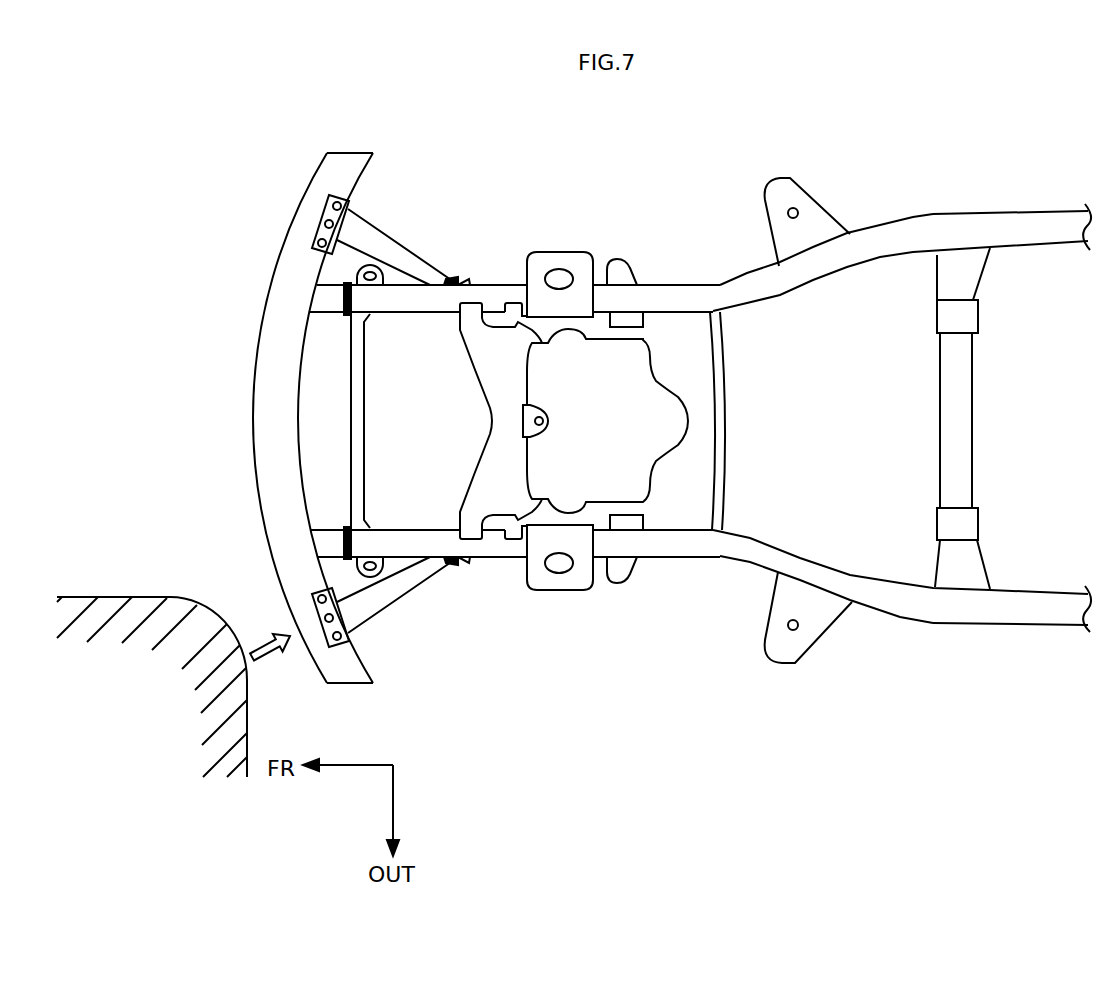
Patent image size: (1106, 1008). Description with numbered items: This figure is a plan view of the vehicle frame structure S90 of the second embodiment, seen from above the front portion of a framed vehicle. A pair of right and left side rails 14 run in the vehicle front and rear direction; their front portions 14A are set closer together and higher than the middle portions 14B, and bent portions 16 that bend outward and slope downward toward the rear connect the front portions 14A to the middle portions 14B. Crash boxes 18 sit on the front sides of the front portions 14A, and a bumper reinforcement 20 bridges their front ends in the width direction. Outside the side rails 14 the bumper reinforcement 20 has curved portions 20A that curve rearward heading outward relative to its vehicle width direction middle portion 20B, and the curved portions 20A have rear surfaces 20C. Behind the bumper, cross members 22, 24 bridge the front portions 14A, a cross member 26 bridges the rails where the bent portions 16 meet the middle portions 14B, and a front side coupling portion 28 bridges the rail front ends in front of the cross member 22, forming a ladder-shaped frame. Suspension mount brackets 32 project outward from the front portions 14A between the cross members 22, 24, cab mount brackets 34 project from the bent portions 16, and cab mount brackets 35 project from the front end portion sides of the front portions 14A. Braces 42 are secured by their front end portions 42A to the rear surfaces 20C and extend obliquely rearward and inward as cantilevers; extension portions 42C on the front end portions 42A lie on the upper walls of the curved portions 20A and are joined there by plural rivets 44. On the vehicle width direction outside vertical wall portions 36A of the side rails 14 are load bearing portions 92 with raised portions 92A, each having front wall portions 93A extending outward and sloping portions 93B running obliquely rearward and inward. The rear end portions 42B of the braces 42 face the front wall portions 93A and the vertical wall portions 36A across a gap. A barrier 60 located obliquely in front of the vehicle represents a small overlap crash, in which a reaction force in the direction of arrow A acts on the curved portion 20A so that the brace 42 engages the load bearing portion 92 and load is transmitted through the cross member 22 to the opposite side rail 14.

The side rails 14 is at (447, 318).
The front portions of the side rails 14A is at (407, 302).
The middle portions of the side rails 14B is at (1028, 225).
The bent portions 16 is at (768, 275).
The crash boxes 18 is at (330, 305).
The bumper reinforcement 20 is at (271, 451).
The curved portions 20A is at (302, 218).
The vehicle width direction middle portion 20B is at (260, 457).
The rear surfaces of the curved portions 20C is at (362, 688).
The cross member 22 is at (508, 425).
The cross member 24 is at (712, 423).
The cross member 26 is at (967, 423).
The front side coupling portion 28 is at (359, 415).
The suspension mount brackets 32 is at (583, 258).
The cab mount brackets 34 is at (803, 194).
The cab mount brackets 35 is at (374, 290).
The vertical wall portions 36A is at (574, 266).
The braces 42 is at (402, 437).
The front end portions of the braces 42A is at (353, 227).
The rear end portions of the braces 42B is at (417, 267).
The extension portions 42C is at (312, 236).
The rivets 44 is at (327, 226).
The barrier 60 is at (197, 617).
The load bearing portions 92 is at (448, 279).
The raised portions 92A is at (468, 279).
The front wall portions 93A is at (454, 278).
The sloping portions 93B is at (513, 282).
The vehicle frame structure S90 is at (439, 645).
The arrow A is at (258, 644).